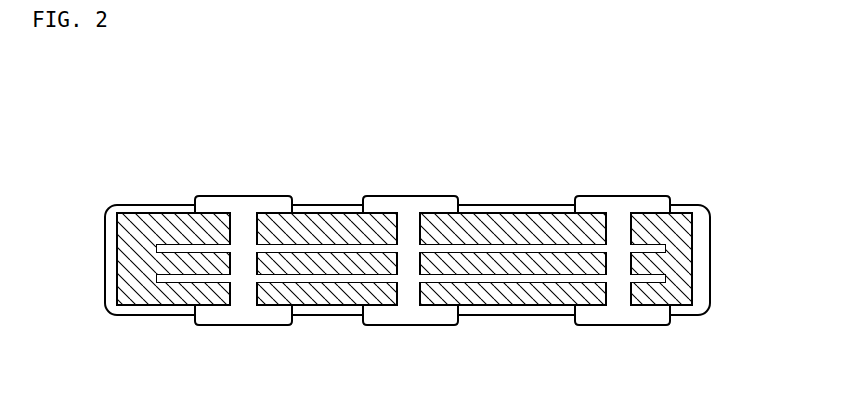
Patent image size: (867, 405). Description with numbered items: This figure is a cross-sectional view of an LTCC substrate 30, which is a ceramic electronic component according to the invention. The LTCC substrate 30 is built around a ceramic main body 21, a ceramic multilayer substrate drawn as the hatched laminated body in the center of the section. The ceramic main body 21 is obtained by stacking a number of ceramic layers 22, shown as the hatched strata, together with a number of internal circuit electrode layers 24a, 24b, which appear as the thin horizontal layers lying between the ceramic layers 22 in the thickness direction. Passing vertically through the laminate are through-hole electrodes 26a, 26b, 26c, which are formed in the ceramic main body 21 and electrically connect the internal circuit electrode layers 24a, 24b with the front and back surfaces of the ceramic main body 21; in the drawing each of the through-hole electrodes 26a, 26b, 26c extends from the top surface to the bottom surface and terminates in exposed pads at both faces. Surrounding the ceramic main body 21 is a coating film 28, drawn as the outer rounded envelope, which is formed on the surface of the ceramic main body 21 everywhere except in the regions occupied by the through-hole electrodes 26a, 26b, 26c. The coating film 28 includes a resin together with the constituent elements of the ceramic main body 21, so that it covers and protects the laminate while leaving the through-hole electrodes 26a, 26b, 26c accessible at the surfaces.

The LTCC substrate 30 is at (133, 148).
The coating film 28 is at (149, 204).
The through-hole electrode 26a is at (237, 199).
The through-hole electrode 26b is at (400, 199).
The through-hole electrode 26c is at (615, 198).
The ceramic main body 21 is at (512, 230).
The ceramic layer 22 is at (183, 229).
The internal circuit electrode layer 24a is at (541, 246).
The internal circuit electrode layer 24b is at (541, 278).